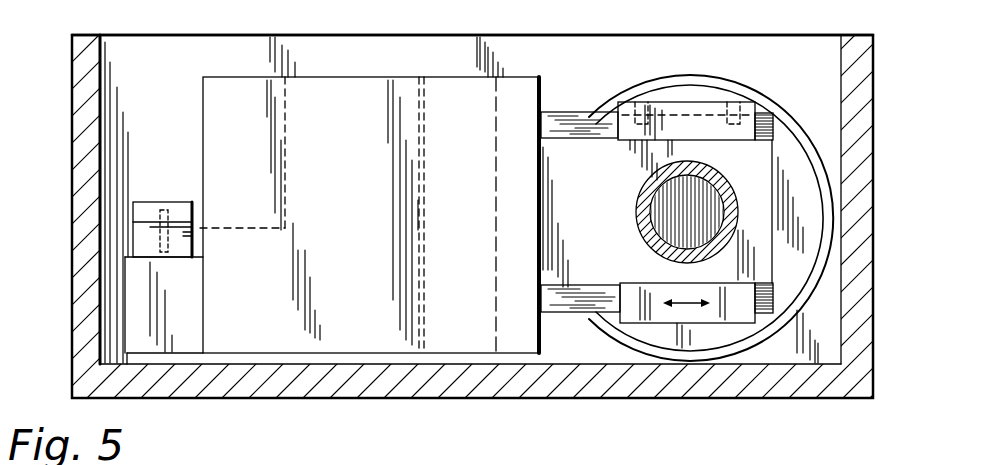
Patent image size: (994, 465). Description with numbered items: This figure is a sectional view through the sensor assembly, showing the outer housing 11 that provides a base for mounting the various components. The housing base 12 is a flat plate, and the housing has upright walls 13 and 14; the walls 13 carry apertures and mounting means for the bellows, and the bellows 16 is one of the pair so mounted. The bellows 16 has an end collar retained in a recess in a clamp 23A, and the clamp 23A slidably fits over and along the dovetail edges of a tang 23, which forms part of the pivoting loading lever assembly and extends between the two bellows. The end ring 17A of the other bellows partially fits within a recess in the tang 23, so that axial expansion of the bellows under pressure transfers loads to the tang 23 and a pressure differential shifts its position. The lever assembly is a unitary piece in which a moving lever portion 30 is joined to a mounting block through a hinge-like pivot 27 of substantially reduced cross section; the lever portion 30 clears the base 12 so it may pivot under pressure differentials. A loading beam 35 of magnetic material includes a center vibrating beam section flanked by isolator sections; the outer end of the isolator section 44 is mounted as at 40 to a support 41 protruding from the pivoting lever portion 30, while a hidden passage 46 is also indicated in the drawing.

The outer housing 11 is at (868, 328).
The housing base 12 is at (605, 388).
The upright wall 13 is at (335, 47).
The upright wall 14 is at (88, 133).
The bellows 16 is at (693, 98).
The end ring 17A is at (698, 182).
The tang 23 is at (622, 308).
The clamp 23A is at (682, 120).
The hinge-like pivot 27 is at (423, 190).
The moving lever portion 30 is at (375, 92).
The loading beam 35 is at (155, 198).
The mounting 40 is at (182, 258).
The support 41 is at (167, 309).
The second isolator section 44 is at (183, 228).
The hidden passage 46 is at (272, 157).